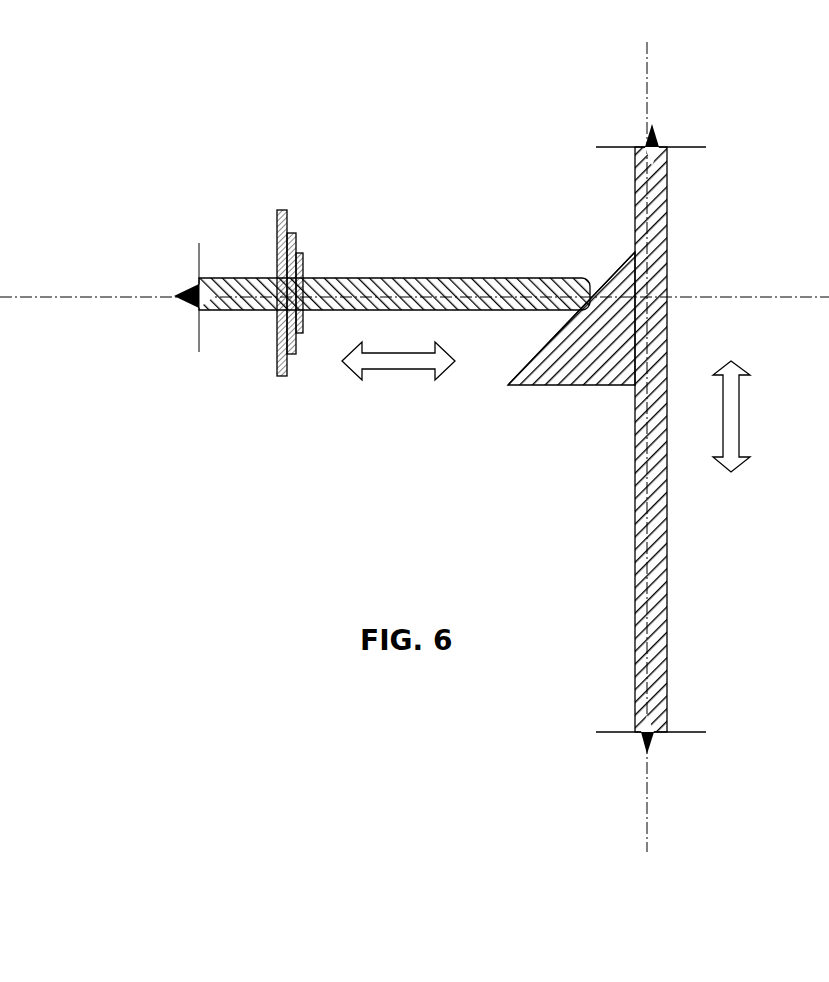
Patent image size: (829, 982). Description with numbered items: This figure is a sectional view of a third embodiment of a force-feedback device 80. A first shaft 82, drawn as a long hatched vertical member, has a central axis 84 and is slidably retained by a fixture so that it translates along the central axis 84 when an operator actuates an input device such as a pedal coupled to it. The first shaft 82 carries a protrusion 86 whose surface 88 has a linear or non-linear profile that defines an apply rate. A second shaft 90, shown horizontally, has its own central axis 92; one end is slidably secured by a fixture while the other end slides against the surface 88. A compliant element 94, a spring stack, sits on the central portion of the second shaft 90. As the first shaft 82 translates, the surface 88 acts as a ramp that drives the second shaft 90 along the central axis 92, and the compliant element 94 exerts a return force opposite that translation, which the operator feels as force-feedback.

The force-feedback device 80 is at (148, 78).
The first shaft 82 is at (667, 660).
The central axis 84 is at (647, 817).
The protrusion 86 is at (530, 387).
The surface 88 is at (610, 285).
The second shaft 90 is at (418, 278).
The central axis 92 is at (33, 299).
The compliant element 94 is at (282, 377).